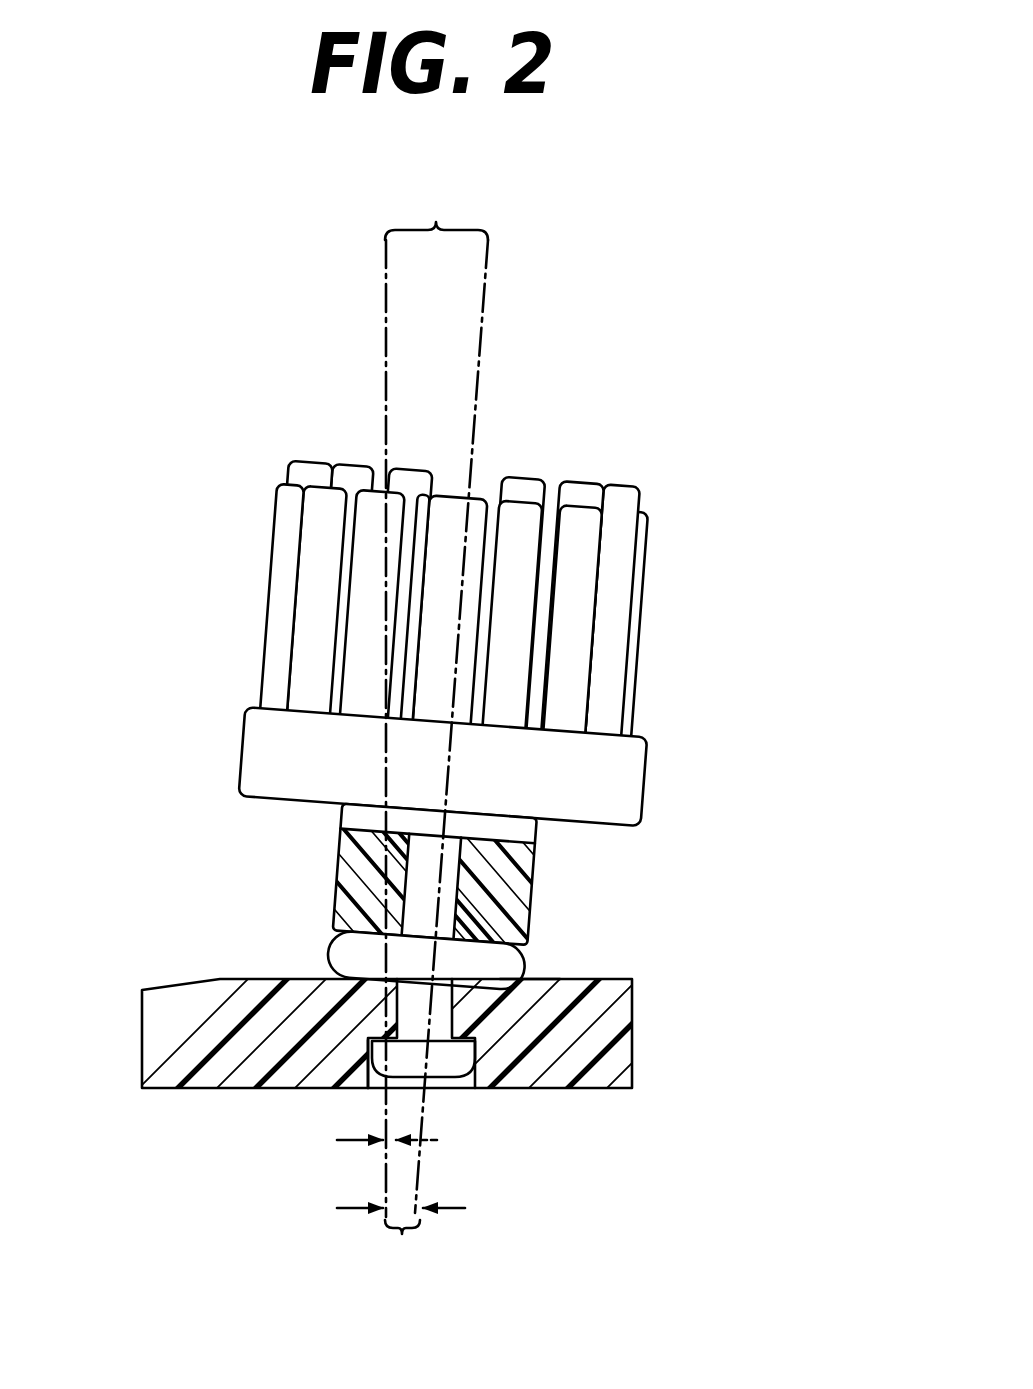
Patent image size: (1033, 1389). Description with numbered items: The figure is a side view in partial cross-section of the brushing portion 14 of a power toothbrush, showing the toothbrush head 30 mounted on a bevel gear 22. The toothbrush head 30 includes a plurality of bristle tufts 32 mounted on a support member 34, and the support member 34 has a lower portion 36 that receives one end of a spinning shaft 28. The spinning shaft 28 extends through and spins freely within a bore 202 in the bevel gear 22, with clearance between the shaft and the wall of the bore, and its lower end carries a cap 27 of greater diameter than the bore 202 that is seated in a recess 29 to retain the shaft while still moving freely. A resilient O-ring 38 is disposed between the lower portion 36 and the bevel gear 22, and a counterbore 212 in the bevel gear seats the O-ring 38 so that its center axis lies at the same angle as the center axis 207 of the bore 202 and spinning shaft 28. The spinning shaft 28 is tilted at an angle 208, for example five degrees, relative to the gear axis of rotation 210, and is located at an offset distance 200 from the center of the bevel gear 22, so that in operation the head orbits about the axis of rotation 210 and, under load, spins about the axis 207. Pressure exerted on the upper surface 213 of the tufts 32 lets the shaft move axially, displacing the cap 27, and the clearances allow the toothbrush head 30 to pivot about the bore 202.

The brushing portion 14 is at (423, 739).
The bevel gear 22 is at (632, 1012).
The cap 27 is at (449, 1080).
The spinning shaft 28 is at (450, 880).
The recess 29 is at (372, 1082).
The toothbrush head 30 is at (538, 554).
The bristle tufts 32 is at (575, 690).
The support member 34 is at (236, 750).
The lower portion 36 is at (353, 877).
The resilient O-ring 38 is at (527, 945).
The offset distance 200 is at (401, 1210).
The bore 202 is at (470, 1078).
The center axis 207 is at (488, 266).
The angle 208 is at (436, 206).
The gear axis of rotation 210 is at (385, 260).
The counterbore 212 is at (520, 984).
The upper surface 213 is at (582, 482).